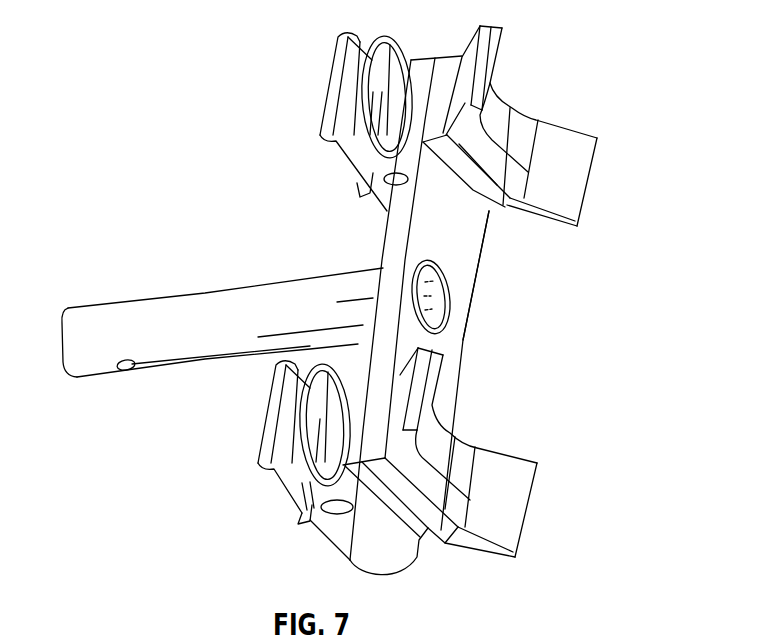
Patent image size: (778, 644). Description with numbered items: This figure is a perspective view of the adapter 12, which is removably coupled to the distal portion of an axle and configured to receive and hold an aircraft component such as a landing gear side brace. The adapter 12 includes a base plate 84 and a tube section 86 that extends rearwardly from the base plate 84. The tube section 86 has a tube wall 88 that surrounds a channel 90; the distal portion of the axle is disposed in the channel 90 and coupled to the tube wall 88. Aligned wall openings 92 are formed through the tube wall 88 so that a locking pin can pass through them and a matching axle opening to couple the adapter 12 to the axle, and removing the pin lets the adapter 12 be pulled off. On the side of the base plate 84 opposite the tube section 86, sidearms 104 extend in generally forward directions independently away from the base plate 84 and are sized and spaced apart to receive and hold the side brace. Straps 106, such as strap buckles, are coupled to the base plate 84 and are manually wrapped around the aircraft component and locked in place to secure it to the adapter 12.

The adapter 12 is at (462, 360).
The base plate 84 is at (474, 257).
The tube section 86 is at (223, 308).
The tube wall 88 is at (175, 349).
The channel 90 is at (520, 332).
The wall openings 92 is at (126, 372).
The sidearms 104 is at (490, 44).
The straps 106 is at (348, 58).